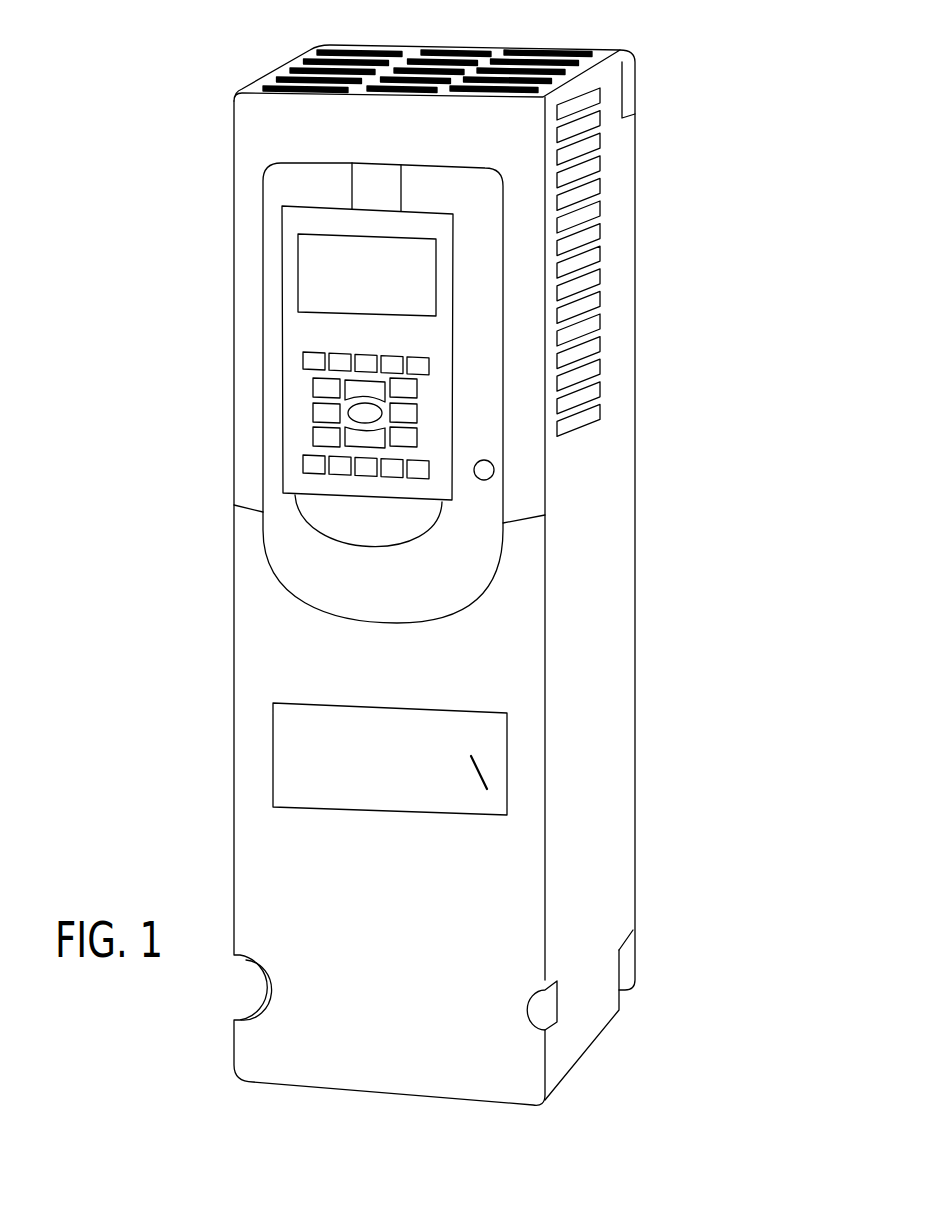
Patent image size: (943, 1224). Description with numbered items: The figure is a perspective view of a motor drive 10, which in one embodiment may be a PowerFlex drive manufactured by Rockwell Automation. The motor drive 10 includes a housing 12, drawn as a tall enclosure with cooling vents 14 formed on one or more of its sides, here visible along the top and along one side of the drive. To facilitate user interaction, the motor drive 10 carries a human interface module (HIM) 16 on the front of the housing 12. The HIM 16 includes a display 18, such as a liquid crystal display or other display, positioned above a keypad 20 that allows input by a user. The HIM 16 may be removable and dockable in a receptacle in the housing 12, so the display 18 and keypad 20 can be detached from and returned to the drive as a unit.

The motor drive 10 is at (738, 75).
The housing 12 is at (610, 720).
The cooling vents 14 is at (535, 62).
The human interface module (HIM) 16 is at (296, 331).
The display 18 is at (327, 283).
The keypad 20 is at (312, 413).